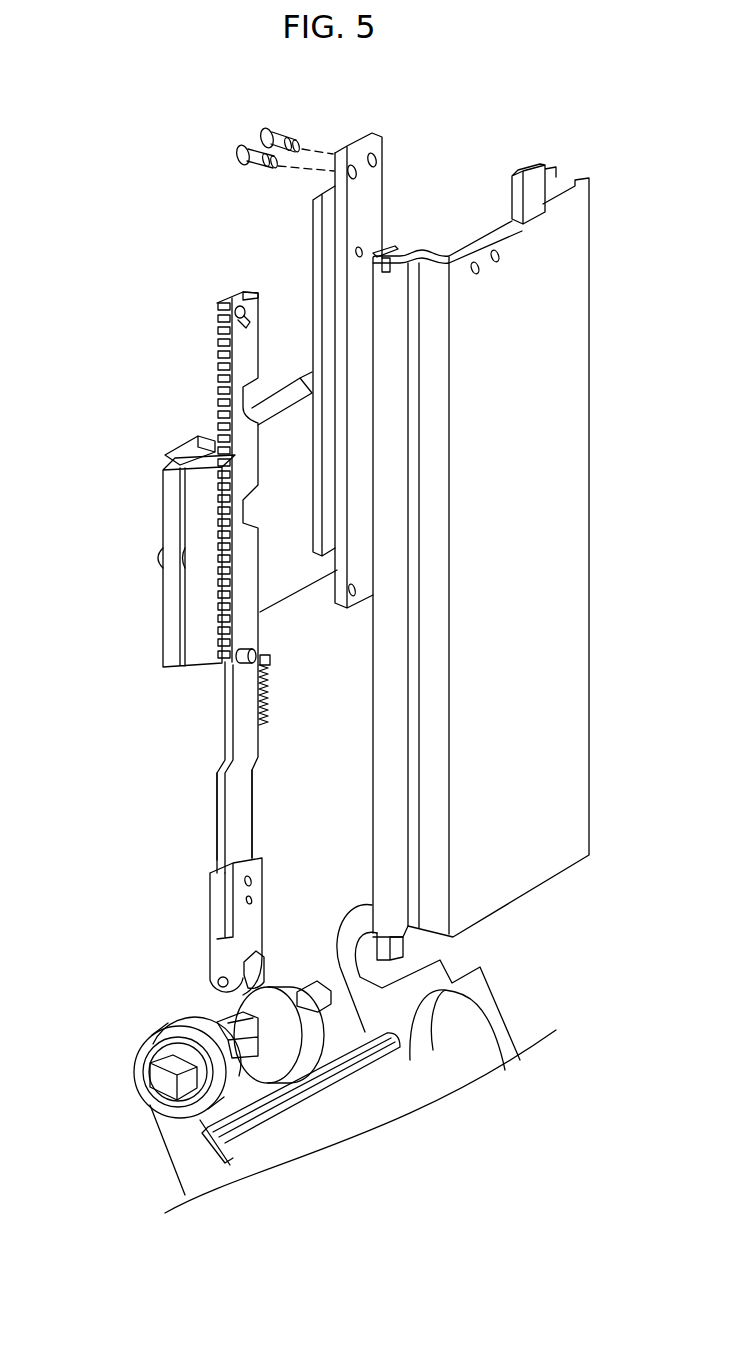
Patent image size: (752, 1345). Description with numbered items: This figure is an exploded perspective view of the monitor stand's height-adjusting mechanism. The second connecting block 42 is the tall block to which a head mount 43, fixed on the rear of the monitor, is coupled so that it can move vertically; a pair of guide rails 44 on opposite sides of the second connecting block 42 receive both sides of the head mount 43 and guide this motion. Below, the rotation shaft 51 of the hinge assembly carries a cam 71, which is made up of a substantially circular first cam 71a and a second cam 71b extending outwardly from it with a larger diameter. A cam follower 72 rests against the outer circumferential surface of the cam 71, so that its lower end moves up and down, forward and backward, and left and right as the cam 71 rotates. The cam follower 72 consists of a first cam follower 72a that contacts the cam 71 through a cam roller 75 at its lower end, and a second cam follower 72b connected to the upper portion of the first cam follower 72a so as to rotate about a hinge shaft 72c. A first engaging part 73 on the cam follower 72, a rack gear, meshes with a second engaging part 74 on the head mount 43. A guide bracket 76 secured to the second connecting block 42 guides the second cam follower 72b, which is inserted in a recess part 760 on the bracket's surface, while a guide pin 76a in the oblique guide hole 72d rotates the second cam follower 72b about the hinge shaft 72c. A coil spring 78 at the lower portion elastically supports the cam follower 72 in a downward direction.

The second connecting block 42 is at (572, 395).
The head mount 43 is at (168, 520).
The guide rails 44 is at (515, 170).
The rotation shaft 51 is at (317, 1005).
The cam 71 is at (243, 1131).
The first cam 71a is at (270, 1043).
The second cam 71b is at (300, 1035).
The cam follower 72 is at (161, 643).
The first cam follower 72a is at (220, 944).
The second cam follower 72b is at (222, 845).
The hinge shaft 72c is at (247, 901).
The guide hole 72d is at (250, 326).
The first engaging part 73 is at (217, 345).
The second engaging part 74 is at (210, 458).
The cam roller 75 is at (262, 970).
The guide bracket 76 is at (382, 196).
The guide pin 76a is at (243, 307).
The recess part 760 is at (322, 226).
The coil spring 78 is at (268, 697).